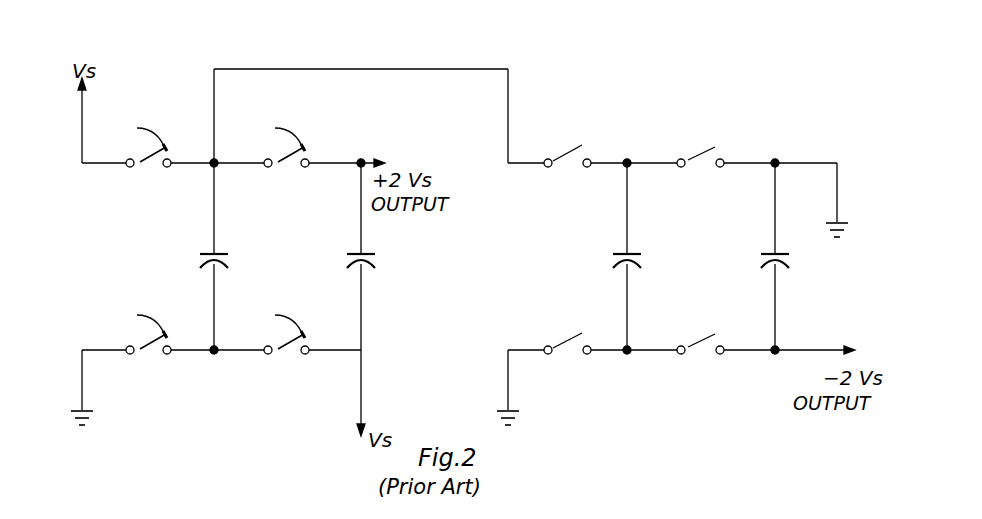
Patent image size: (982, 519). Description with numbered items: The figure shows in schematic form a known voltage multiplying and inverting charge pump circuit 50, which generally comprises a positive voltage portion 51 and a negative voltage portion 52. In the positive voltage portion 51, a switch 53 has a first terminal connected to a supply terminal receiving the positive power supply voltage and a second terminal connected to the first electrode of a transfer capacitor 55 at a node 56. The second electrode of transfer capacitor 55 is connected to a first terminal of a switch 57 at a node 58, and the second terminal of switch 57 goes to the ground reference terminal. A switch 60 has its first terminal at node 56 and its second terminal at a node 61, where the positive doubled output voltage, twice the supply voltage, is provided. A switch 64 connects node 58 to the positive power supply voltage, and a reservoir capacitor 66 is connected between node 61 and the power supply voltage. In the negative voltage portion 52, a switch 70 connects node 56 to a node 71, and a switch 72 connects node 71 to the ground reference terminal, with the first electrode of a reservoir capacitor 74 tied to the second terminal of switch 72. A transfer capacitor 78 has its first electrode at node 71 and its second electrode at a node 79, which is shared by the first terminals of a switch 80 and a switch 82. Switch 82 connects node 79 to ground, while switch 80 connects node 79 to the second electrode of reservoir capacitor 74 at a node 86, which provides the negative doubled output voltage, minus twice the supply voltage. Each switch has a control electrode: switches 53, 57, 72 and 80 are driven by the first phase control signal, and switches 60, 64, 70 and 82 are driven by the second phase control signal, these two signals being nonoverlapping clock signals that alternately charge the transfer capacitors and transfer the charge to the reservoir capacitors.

The voltage multiplying and inverting charge pump circuit 50 is at (149, 63).
The positive voltage portion 51 is at (96, 248).
The negative voltage portion 52 is at (541, 284).
The switch 53 is at (147, 168).
The transfer capacitor 55 is at (212, 252).
The node 56 is at (217, 167).
The switch 57 is at (156, 355).
The node 58 is at (216, 356).
The switch 60 is at (293, 168).
The node 61 is at (360, 160).
The switch 64 is at (296, 355).
The reservoir capacitor 66 is at (358, 252).
The switch 70 is at (570, 170).
The node 71 is at (630, 160).
The switch 72 is at (704, 170).
The reservoir capacitor 74 is at (773, 252).
The transfer capacitor 78 is at (625, 252).
The node 79 is at (628, 356).
The switch 80 is at (697, 355).
The switch 82 is at (571, 355).
The node 86 is at (778, 347).